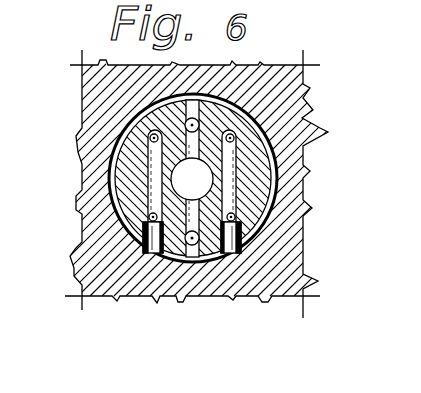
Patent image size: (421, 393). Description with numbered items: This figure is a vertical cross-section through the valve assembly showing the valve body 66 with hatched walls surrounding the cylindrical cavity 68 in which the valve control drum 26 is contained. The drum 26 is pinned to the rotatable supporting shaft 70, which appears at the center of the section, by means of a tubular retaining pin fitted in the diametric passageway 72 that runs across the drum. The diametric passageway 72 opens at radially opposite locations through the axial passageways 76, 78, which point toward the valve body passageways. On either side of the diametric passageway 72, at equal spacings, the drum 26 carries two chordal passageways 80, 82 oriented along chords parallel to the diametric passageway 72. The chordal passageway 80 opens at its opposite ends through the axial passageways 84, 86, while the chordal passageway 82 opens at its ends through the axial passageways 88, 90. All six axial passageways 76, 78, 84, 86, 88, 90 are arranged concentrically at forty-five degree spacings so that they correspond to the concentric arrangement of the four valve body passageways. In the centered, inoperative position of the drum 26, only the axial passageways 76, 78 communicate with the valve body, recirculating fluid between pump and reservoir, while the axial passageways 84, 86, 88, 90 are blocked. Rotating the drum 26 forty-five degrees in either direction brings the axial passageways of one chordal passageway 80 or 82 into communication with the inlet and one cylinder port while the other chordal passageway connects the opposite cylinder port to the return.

The valve control drum 26 is at (267, 180).
The valve body 66 is at (288, 70).
The cylindrical cavity 68 is at (127, 125).
The rotatable supporting shaft 70 is at (200, 185).
The diametric passageway 72 is at (230, 133).
The axial passageway 76 is at (193, 118).
The axial passageway 78 is at (192, 241).
The chordal passageway 80 is at (230, 191).
The chordal passageway 82 is at (155, 177).
The axial passageway 84 is at (283, 160).
The axial passageway 86 is at (240, 233).
The axial passageway 88 is at (148, 150).
The axial passageway 90 is at (143, 226).